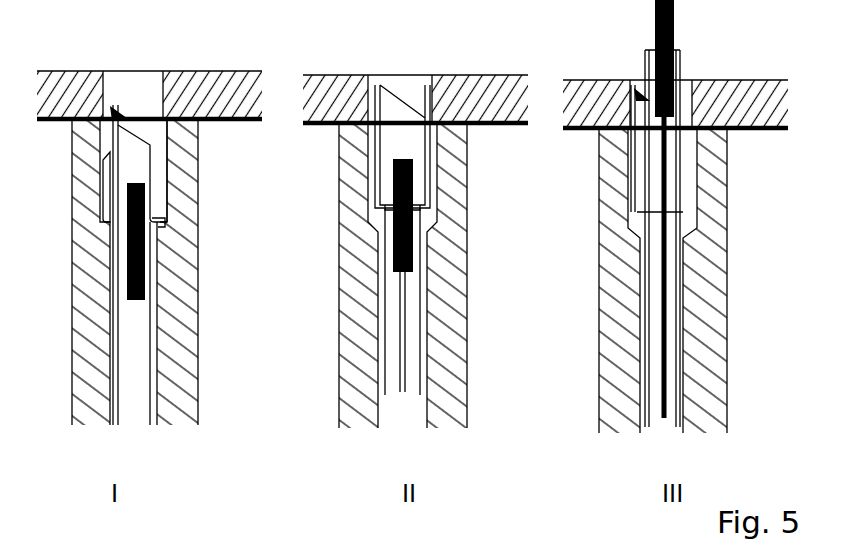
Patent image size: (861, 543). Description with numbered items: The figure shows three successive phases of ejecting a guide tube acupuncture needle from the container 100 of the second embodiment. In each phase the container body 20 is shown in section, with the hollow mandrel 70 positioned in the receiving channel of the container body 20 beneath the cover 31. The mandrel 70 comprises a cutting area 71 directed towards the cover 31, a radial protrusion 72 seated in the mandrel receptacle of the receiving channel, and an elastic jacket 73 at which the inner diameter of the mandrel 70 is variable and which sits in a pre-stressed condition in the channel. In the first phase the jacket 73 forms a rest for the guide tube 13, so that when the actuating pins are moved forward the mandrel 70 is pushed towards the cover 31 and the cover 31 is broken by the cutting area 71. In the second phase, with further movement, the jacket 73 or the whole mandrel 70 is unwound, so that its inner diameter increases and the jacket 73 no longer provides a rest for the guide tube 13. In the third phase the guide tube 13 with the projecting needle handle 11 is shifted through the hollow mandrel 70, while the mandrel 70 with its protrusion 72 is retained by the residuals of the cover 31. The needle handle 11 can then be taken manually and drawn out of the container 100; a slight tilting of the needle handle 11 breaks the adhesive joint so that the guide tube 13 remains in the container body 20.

The needle handle 11 is at (657, 33).
The guide tube 13 is at (138, 345).
The container body 20 is at (702, 332).
The cover 31 is at (148, 119).
The hollow mandrel 70 is at (133, 162).
The cutting area 71 is at (618, 540).
The radial protrusion 72 is at (632, 165).
The elastic jacket 73 is at (157, 225).
The container 100 is at (800, 274).